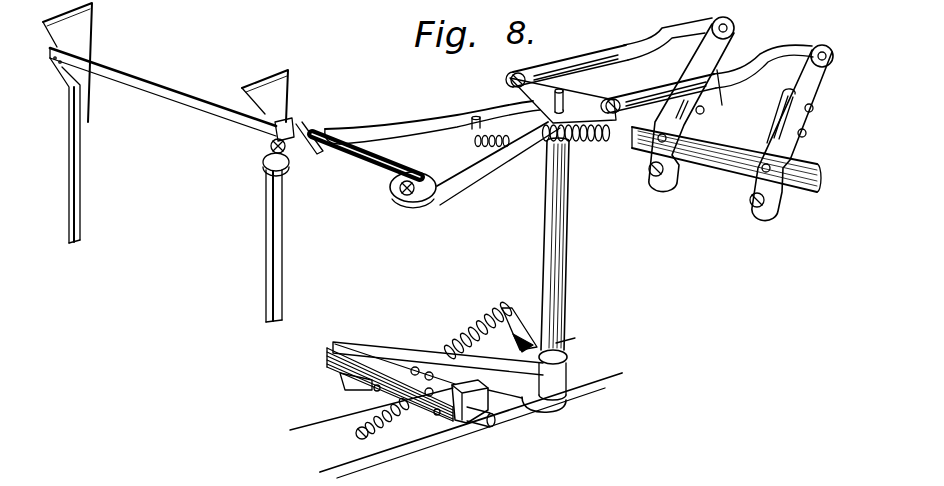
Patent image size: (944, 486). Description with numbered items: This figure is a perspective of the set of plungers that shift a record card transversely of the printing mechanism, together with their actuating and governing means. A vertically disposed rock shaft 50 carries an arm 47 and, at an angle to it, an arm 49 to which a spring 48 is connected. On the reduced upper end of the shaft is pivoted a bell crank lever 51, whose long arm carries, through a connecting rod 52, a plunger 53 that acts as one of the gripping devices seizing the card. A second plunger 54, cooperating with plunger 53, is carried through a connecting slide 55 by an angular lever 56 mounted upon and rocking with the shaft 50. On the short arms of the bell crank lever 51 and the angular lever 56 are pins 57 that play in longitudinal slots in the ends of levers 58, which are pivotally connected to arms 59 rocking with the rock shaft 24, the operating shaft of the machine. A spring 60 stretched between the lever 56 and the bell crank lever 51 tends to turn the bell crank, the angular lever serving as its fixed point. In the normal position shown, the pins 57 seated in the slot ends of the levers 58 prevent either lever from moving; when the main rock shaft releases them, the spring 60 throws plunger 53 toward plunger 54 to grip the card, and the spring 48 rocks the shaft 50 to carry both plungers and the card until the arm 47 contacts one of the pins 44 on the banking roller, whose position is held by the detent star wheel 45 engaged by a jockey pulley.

The rock shaft 24 is at (730, 163).
The pins 44 is at (435, 414).
The detent star wheel 45 is at (275, 386).
The arm 47 is at (514, 357).
The spring 48 is at (467, 345).
The arm 49 is at (520, 336).
The vertically disposed rock shaft 50 is at (567, 268).
The bell crank lever 51 is at (606, 103).
The connecting rod 52 is at (378, 158).
The plunger 53 is at (272, 93).
The second plunger 54 is at (92, 25).
The connecting slide 55 is at (185, 100).
The angular lever 56 is at (413, 124).
The pins 57 is at (484, 163).
The levers 58 is at (622, 63).
The arms 59 is at (697, 116).
The spring 60 is at (587, 142).